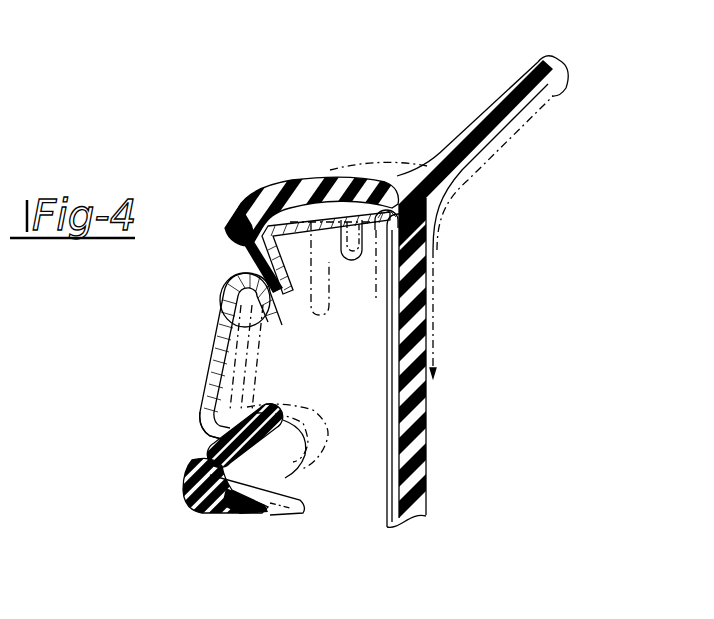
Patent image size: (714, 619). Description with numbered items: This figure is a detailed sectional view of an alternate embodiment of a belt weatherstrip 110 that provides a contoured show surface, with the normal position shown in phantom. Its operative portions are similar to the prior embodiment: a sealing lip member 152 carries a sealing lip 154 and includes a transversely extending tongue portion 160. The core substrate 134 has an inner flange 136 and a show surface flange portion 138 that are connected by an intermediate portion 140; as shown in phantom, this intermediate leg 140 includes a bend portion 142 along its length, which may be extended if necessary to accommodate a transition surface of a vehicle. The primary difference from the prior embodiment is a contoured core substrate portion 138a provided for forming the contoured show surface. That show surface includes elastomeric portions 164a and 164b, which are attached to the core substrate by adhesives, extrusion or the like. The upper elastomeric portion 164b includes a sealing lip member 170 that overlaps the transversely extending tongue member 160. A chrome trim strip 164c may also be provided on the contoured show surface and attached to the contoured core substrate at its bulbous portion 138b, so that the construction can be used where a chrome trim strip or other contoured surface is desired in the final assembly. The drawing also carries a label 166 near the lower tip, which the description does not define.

The weatherstrip 110 is at (237, 193).
The core substrate 134 is at (393, 190).
The inner flange 136 is at (395, 398).
The show surface flange portion 138 is at (207, 357).
The contoured core substrate portion 138a is at (223, 308).
The bulbous portion 138b is at (212, 416).
The intermediate portion 140 is at (333, 178).
The bend portion 142 is at (360, 265).
The sealing lip member 152 is at (413, 333).
The sealing lip 154 is at (520, 80).
The tongue portion 160 is at (378, 185).
The elastomeric portion 164a is at (183, 477).
The upper elastomeric portion 164b is at (240, 227).
The chrome trim strip 164c is at (233, 288).
The seal tip 166 is at (223, 507).
The sealing lip member 170 is at (343, 178).